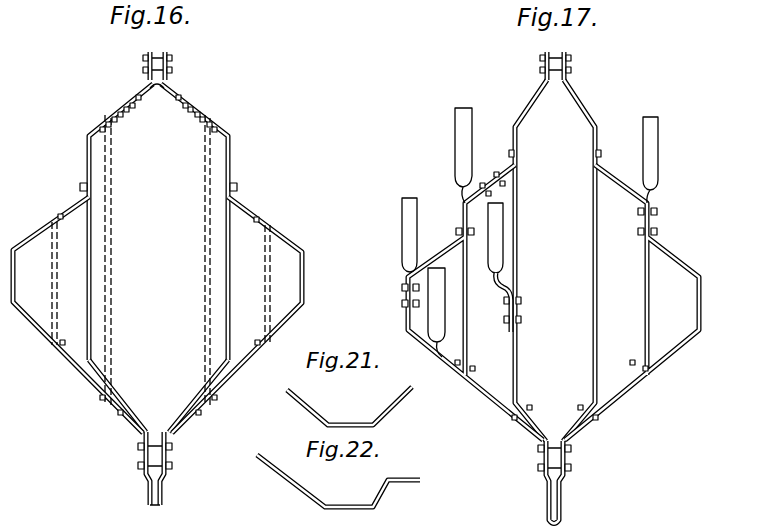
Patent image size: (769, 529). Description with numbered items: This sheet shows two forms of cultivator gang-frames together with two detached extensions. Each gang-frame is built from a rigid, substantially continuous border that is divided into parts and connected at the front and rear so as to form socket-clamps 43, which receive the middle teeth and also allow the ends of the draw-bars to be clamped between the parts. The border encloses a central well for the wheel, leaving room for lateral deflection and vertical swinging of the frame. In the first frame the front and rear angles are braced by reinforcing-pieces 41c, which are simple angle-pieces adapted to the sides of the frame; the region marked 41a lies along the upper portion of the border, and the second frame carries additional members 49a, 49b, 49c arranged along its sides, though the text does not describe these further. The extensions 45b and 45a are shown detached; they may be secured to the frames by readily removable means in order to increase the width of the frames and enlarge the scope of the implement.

In FIG. 16, the upper section of shell 41a is at (155, 89).
In FIG. 16, the reinforcing-piece 41c is at (173, 415).
In FIG. 16, the socket-clamp 43 is at (173, 63).
In FIG. 17, the socket-clamp 43 is at (572, 63).
In FIG. 17, the deflector plate 49a is at (460, 358).
In FIG. 17, the deflector plate 49b is at (485, 165).
In FIG. 17, the deflector plate 49c is at (521, 313).
In FIG. 22, the extension 45a is at (355, 498).
In FIG. 21, the extension 45b is at (363, 408).